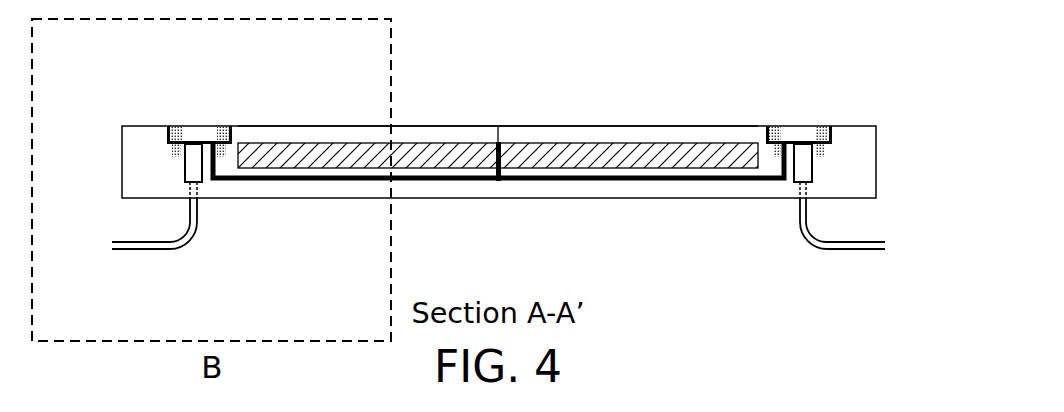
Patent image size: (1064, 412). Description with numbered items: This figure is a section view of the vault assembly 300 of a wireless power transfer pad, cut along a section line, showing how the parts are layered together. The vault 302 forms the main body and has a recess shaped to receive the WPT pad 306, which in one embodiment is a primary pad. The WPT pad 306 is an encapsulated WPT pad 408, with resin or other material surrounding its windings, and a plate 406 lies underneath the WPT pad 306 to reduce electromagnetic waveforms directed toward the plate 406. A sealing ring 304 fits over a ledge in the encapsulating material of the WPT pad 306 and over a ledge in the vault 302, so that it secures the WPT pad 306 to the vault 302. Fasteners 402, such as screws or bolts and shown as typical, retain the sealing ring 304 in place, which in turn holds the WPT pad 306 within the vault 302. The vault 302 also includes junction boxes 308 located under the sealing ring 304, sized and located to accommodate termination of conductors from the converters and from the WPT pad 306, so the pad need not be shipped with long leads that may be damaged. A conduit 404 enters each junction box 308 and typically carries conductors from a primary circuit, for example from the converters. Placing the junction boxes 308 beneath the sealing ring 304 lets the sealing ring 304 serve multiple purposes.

The vault assembly 300 is at (145, 75).
The vault 302 is at (338, 198).
The sealing ring 304 is at (208, 125).
The WPT pad 306 is at (337, 142).
The junction box 308 is at (184, 176).
The fasteners 402 is at (175, 125).
The conduit 404 is at (158, 250).
The plate 406 is at (455, 178).
The encapsulated WPT pad 408 is at (442, 125).